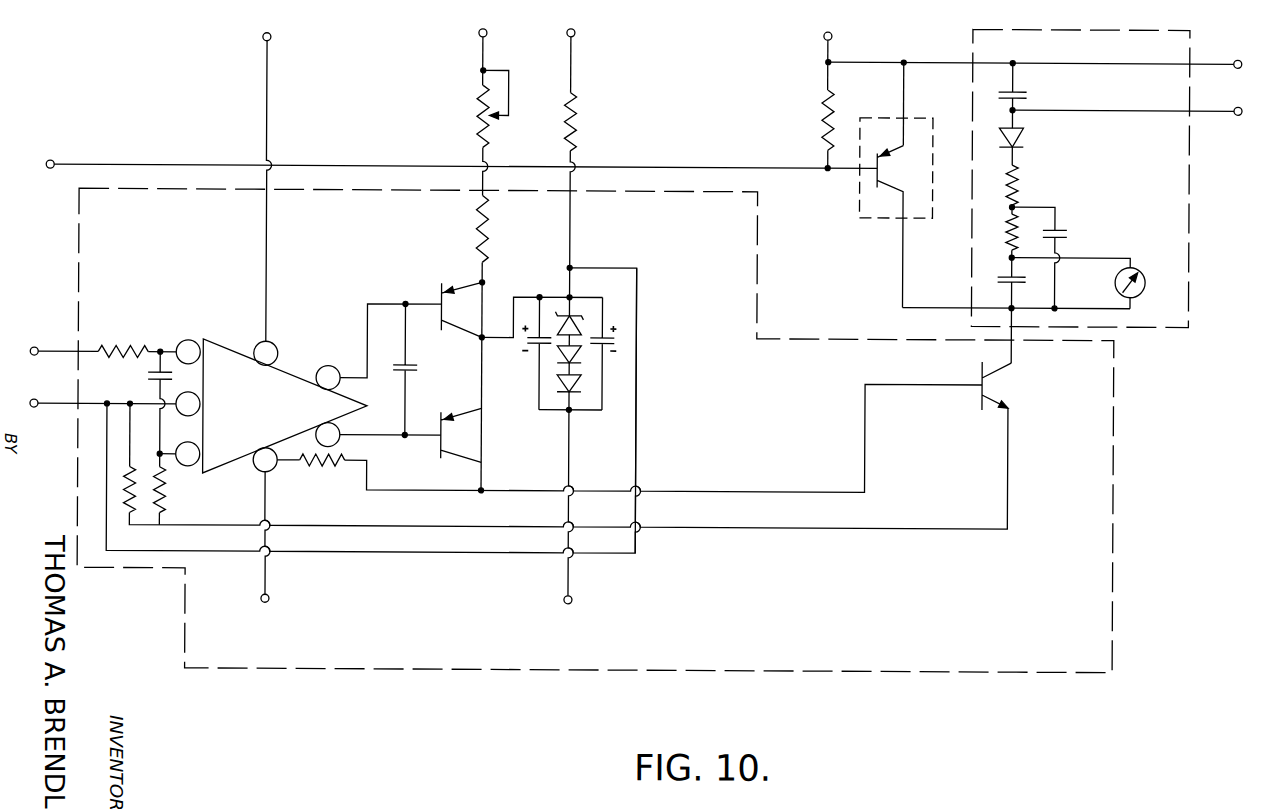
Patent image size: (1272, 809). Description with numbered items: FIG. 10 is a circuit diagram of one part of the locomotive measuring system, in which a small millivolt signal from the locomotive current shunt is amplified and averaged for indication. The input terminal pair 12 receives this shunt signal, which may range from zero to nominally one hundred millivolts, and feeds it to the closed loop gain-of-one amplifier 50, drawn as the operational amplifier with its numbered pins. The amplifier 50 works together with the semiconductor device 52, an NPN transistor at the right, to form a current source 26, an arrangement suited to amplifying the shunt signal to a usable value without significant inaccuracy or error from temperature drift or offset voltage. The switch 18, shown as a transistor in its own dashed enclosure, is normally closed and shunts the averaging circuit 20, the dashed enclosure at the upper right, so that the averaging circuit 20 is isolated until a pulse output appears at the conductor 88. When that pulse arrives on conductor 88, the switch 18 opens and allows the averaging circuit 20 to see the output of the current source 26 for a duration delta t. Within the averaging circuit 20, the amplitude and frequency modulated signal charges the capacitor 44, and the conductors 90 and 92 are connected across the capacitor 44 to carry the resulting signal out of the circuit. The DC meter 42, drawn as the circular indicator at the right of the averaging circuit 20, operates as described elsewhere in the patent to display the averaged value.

The conductor 88 is at (153, 167).
The input terminal pair 12 is at (56, 326).
The gain-of-one amplifier 50 is at (298, 360).
The switch 18 is at (848, 207).
The capacitor 44 is at (1015, 90).
The conductor 90 is at (1210, 59).
The conductor 92 is at (1206, 110).
The DC meter 42 is at (1143, 269).
The semiconductor device 52 is at (1003, 383).
The averaging circuit 20 is at (1138, 329).
The current source 26 is at (455, 671).